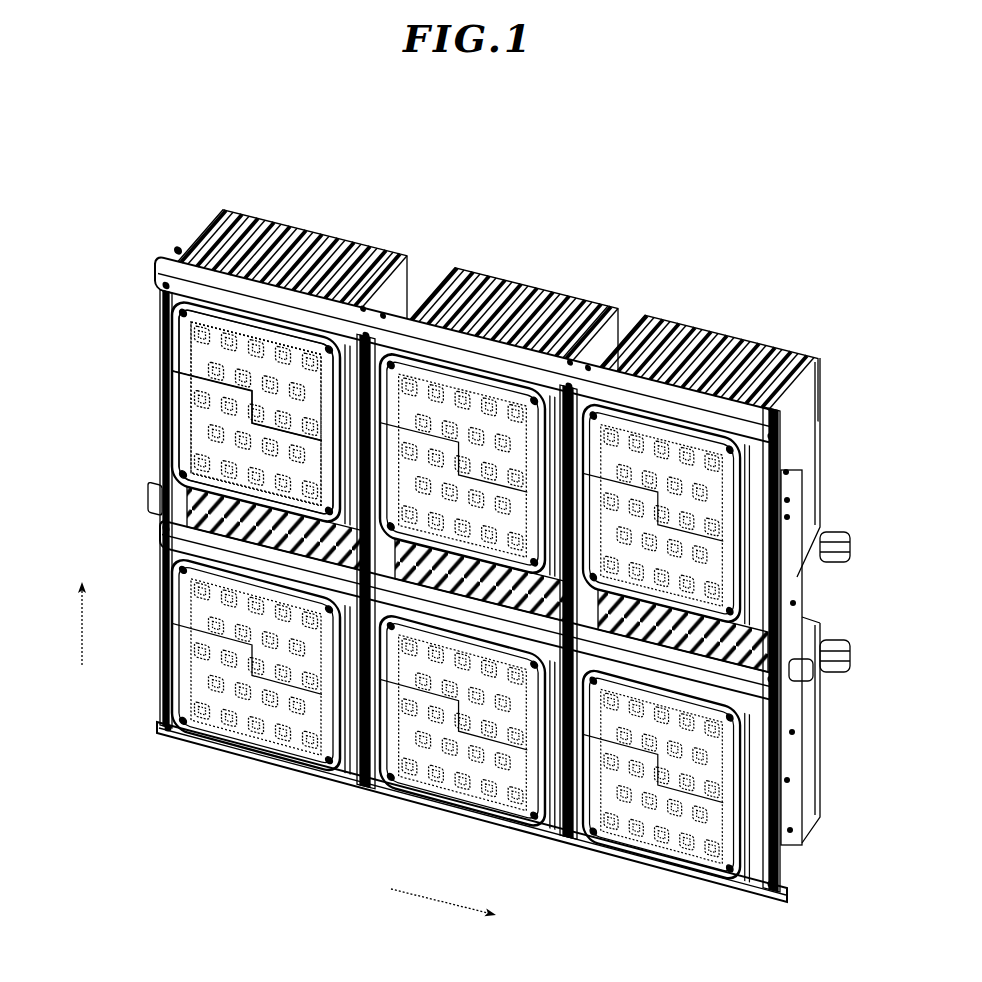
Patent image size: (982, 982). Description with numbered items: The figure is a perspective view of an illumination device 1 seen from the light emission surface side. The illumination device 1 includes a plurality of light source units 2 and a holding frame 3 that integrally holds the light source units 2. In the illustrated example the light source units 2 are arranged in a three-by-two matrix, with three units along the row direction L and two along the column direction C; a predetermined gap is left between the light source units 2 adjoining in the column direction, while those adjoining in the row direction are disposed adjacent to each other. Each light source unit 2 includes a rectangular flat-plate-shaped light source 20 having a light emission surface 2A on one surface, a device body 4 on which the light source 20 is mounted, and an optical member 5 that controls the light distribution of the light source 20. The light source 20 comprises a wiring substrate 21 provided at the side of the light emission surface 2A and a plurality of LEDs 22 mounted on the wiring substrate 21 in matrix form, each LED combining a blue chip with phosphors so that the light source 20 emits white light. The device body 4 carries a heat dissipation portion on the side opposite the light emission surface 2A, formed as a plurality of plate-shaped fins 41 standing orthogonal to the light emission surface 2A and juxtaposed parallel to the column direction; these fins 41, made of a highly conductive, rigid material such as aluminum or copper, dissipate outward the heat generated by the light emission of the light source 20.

The illumination device 1 is at (451, 174).
The light source unit 2 is at (400, 511).
The light emission surface 2A is at (248, 428).
The holding frame 3 is at (783, 862).
The device body 4 is at (455, 402).
The optical member 5 is at (168, 422).
The light source 20 is at (162, 318).
The wiring substrate 21 is at (178, 348).
The LED 22 is at (174, 390).
The plate-shaped fin 41 is at (380, 252).